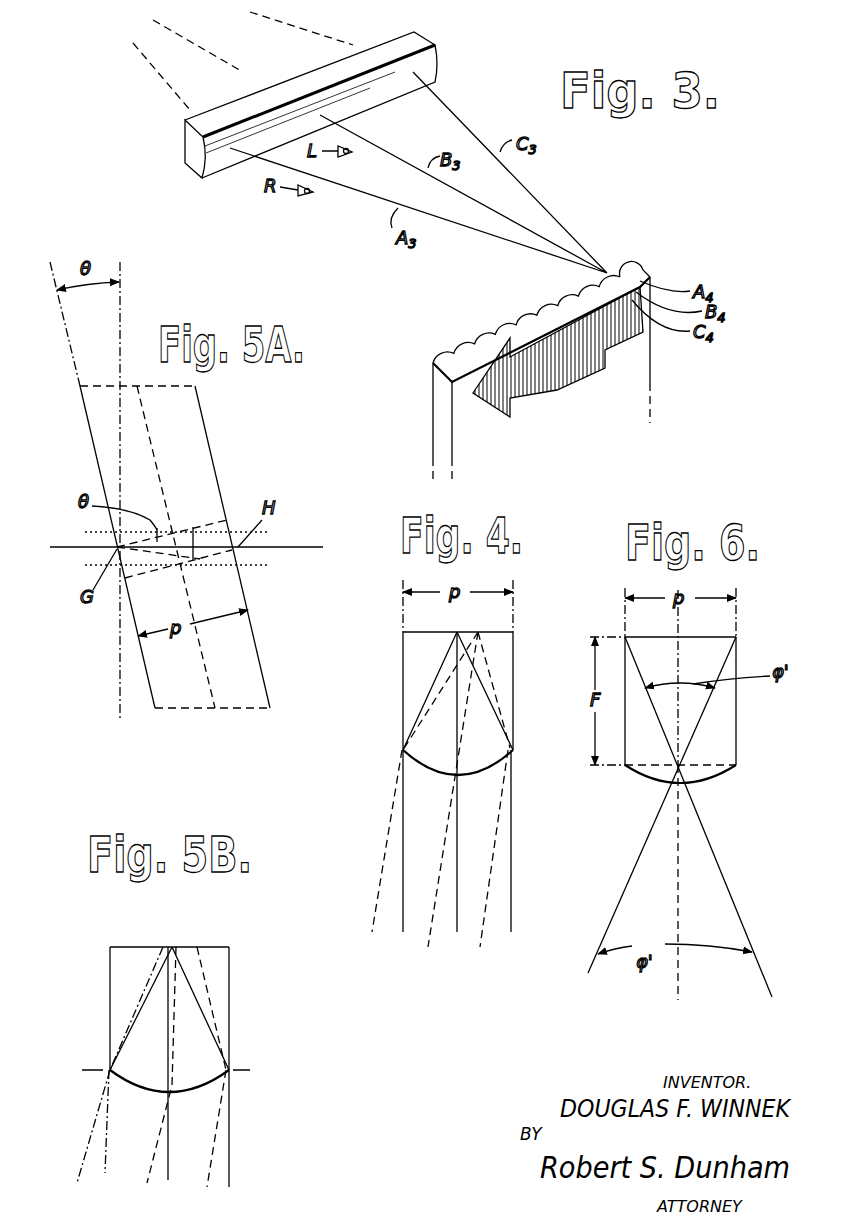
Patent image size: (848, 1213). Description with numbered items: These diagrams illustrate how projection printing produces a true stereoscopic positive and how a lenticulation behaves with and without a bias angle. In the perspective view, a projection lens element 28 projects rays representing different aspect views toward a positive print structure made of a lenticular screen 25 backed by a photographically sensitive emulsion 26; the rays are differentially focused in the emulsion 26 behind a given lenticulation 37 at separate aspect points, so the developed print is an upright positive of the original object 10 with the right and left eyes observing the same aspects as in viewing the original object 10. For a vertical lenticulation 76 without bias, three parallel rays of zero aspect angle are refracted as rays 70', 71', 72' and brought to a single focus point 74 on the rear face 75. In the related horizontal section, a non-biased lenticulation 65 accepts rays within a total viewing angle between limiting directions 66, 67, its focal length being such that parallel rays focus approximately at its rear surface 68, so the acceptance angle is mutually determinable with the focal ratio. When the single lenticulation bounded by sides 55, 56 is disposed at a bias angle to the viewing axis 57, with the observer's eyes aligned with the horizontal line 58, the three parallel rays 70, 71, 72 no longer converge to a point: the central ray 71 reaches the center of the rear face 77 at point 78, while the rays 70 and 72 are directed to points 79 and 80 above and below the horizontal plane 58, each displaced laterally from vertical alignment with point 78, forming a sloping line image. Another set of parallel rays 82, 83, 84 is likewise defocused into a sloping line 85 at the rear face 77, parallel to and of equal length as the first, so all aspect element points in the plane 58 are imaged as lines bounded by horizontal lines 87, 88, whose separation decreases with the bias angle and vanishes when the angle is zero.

In FIG. 3, the achromat 28 is at (185, 165).
In FIG. 3, the lenticular screen 25 is at (656, 278).
In FIG. 3, the photographically sensitive emulsion 26 is at (640, 373).
In FIG. 3, the lenticulation 37 is at (641, 270).
In FIG. 3, the original object 10 is at (520, 388).
In FIG. 5A, the side boundary of lenticulation 55 is at (88, 425).
In FIG. 5B, the side boundary of lenticulation 55 is at (110, 1005).
In FIG. 5A, the side boundary of lenticulation 56 is at (211, 422).
In FIG. 5B, the side boundary of lenticulation 56 is at (229, 1013).
In FIG. 5A, the viewing axis 57 is at (122, 296).
In FIG. 5A, the horizontal line 58 is at (292, 547).
In FIG. 5A, the point on rear face 78 is at (177, 550).
In FIG. 5B, the point on rear face 78 is at (168, 947).
In FIG. 5A, the point on rear face 79 is at (173, 530).
In FIG. 5B, the point on rear face 79 is at (163, 947).
In FIG. 5A, the point on rear face 80 is at (180, 545).
In FIG. 5B, the point on rear face 80 is at (172, 947).
In FIG. 5A, the sloping line image 85 is at (235, 557).
In FIG. 5B, the sloping line image 85 is at (198, 945).
In FIG. 5A, the horizontal boundary line 87 is at (92, 522).
In FIG. 5A, the horizontal boundary line 88 is at (85, 563).
In FIG. 4, the focus point 74 is at (457, 632).
In FIG. 4, the rear face 75 is at (403, 630).
In FIG. 4, the lenticulation 76 is at (513, 684).
In FIG. 4, the refracted ray 70' is at (403, 841).
In FIG. 4, the refracted ray 71' is at (473, 848).
In FIG. 4, the refracted ray 72' is at (512, 848).
In FIG. 6, the lenticulation 65 is at (728, 717).
In FIG. 6, the rear surface 68 is at (713, 637).
In FIG. 6, the limiting direction 66 is at (647, 842).
In FIG. 6, the limiting direction 67 is at (713, 845).
In FIG. 5B, the rear face 77 is at (132, 947).
In FIG. 5B, the parallel ray 70 is at (79, 1121).
In FIG. 5B, the parallel ray 71 is at (186, 1063).
In FIG. 5B, the parallel ray 72 is at (248, 1128).
In FIG. 5B, the parallel ray 82 is at (98, 1106).
In FIG. 5B, the parallel ray 83 is at (158, 1137).
In FIG. 5B, the parallel ray 84 is at (217, 1142).